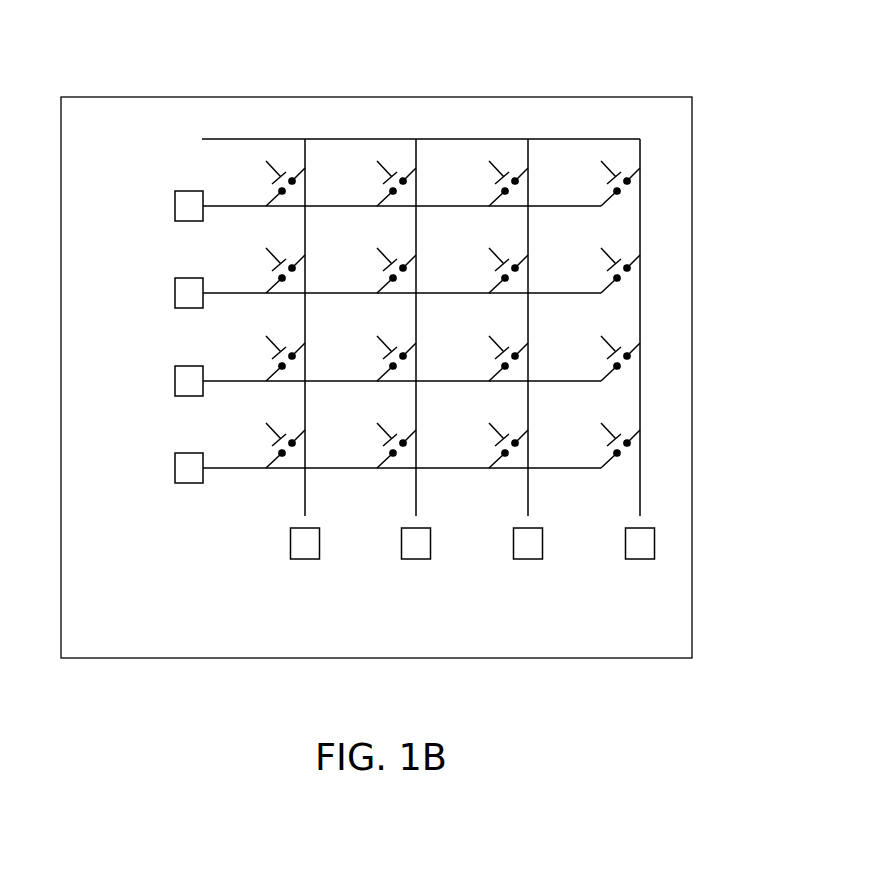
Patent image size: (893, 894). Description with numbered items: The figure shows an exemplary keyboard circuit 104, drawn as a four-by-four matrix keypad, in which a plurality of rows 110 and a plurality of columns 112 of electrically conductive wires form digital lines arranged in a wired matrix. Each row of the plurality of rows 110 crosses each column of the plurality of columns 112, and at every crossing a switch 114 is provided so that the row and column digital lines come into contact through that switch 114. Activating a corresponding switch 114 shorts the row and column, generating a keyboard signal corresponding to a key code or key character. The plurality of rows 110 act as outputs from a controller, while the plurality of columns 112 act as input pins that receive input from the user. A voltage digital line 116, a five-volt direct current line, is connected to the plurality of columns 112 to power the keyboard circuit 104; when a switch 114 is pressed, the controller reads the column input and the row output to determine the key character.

The keyboard circuit 104 is at (675, 47).
The plurality of rows 110 is at (112, 356).
The plurality of columns 112 is at (481, 633).
The switch 114 is at (648, 277).
The voltage digital line 116 is at (180, 165).